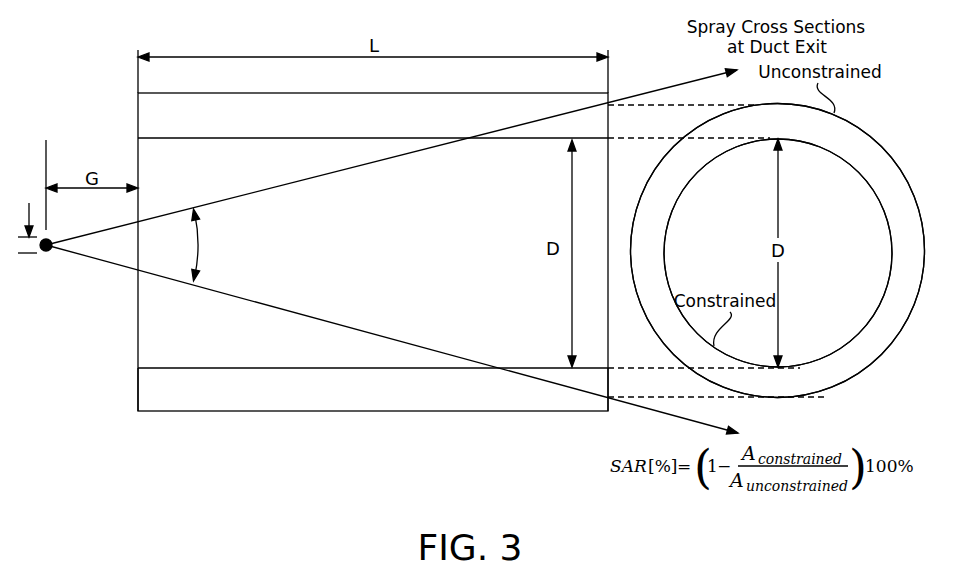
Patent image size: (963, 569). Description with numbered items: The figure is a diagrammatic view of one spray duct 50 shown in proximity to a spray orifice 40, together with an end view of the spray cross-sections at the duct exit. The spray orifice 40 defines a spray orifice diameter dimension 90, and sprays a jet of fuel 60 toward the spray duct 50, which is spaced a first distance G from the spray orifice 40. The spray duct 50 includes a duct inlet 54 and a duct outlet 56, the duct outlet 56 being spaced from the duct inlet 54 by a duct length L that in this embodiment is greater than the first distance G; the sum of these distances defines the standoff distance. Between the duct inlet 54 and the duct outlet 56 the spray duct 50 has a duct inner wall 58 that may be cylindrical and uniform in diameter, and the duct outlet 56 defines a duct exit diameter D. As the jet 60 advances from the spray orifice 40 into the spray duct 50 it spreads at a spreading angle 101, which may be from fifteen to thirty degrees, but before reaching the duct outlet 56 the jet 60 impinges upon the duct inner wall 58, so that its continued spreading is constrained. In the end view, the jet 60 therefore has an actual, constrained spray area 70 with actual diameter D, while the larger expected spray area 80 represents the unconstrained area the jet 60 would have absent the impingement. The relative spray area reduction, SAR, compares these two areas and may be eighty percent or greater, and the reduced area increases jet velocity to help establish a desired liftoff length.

The spray orifice 40 is at (46, 262).
The spray duct 50 is at (375, 412).
The duct inlet 54 is at (138, 369).
The duct outlet 56 is at (609, 370).
The duct inner wall 58 is at (350, 367).
The jet of fuel 60 is at (117, 266).
The actual spray area 70 is at (813, 343).
The expected spray area 80 is at (870, 338).
The spray orifice diameter dimension 90 is at (29, 255).
The spreading angle 101 is at (203, 246).